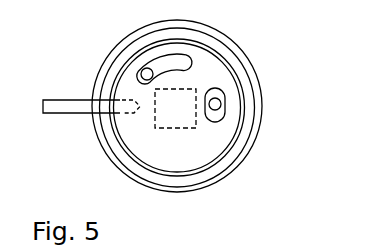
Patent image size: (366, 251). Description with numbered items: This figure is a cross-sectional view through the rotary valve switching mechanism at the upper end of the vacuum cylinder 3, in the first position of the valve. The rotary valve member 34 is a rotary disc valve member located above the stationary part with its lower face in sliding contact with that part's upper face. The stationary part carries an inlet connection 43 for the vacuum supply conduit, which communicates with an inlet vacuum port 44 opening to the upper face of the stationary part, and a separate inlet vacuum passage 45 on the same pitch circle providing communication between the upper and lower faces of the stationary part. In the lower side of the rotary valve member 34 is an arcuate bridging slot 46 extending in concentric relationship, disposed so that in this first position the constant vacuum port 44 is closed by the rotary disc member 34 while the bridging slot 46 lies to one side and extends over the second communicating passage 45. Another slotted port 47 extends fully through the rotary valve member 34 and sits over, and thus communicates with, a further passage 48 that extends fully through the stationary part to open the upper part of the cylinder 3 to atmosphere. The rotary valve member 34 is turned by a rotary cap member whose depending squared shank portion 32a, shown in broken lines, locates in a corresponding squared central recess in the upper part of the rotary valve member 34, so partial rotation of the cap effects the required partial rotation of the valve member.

The cylinder 3 is at (258, 103).
The depending squared shank portion 32a is at (156, 128).
The rotary valve member 34 is at (205, 157).
The inlet connection 43 is at (67, 101).
The inlet vacuum port 44 is at (139, 108).
The inlet vacuum passage 45 is at (144, 68).
The arcuate bridging slot 46 is at (183, 58).
The slotted port 47 is at (222, 119).
The further passage 48 is at (221, 102).